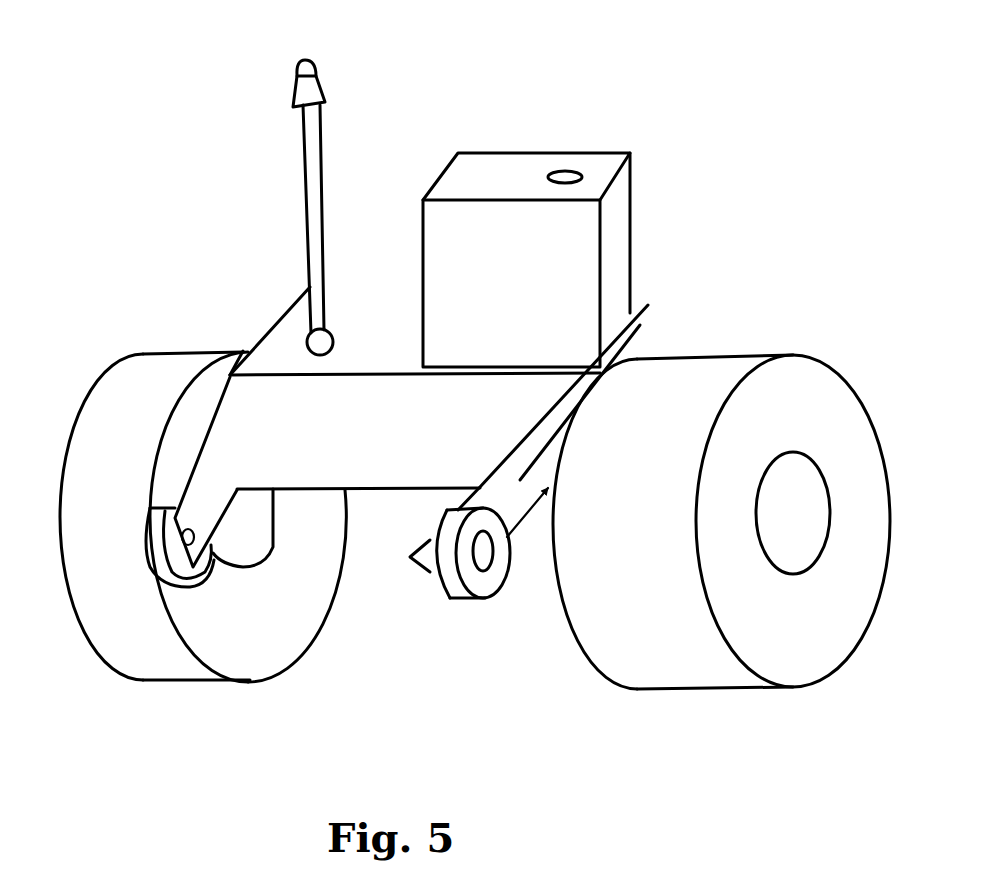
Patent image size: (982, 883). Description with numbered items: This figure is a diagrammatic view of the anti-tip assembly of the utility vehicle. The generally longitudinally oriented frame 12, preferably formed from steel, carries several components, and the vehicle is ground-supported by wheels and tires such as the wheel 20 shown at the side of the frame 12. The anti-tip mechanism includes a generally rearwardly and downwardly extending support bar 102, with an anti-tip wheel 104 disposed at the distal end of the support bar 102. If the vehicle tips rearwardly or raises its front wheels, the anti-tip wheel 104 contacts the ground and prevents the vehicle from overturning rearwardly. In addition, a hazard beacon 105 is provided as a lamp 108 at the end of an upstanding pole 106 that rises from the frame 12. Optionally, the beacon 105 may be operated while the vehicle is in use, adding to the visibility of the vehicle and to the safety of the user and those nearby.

The frame 12 is at (393, 490).
The wheel and tire 20 is at (660, 650).
The support bar 102 is at (523, 482).
The anti-tip wheel 104 is at (452, 598).
The hazard beacon 105 is at (327, 178).
The upstanding pole 106 is at (307, 168).
The lamp 108 is at (300, 88).